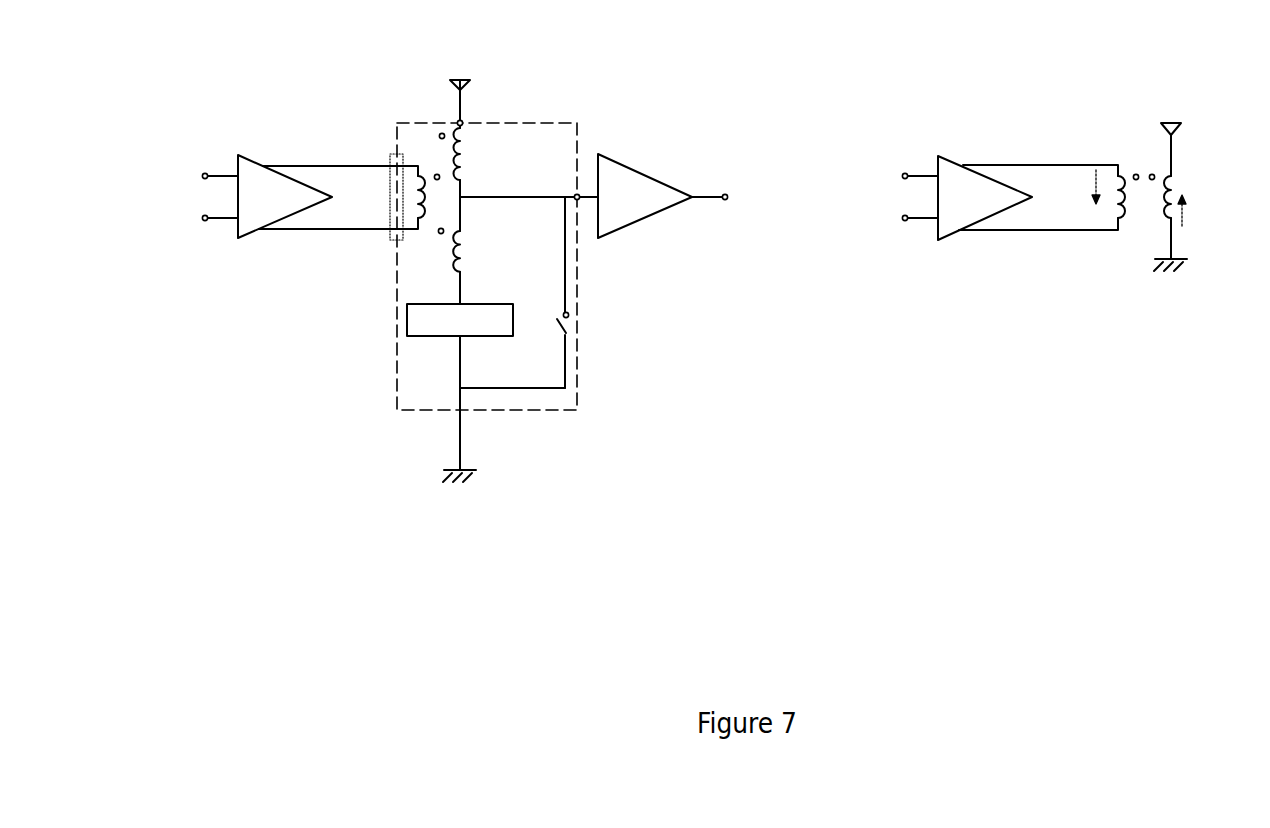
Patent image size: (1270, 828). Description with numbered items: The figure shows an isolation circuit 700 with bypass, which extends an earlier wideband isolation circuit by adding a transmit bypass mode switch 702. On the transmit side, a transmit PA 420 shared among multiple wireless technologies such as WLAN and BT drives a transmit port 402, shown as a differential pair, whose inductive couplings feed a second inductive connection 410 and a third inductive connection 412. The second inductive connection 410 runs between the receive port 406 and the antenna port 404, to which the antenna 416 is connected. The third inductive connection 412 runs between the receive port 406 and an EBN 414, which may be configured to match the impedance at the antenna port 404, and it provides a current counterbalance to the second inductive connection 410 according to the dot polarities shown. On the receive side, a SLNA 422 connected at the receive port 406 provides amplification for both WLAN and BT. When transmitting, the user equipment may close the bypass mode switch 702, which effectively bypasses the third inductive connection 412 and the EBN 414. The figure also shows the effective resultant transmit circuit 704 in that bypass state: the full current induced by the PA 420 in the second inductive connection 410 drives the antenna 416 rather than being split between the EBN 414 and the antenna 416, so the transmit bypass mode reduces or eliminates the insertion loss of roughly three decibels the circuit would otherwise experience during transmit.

The antenna 416 is at (456, 80).
The antenna port 404 is at (457, 122).
The transmit port 402 is at (394, 152).
The transmit PA 420 is at (250, 233).
The third inductive connection 412 is at (462, 247).
The receive port 406 is at (575, 196).
The SLNA 422 is at (614, 228).
The EBN 414 is at (500, 330).
The transmit bypass mode switch 702 is at (559, 336).
The isolation circuit with bypass 700 is at (437, 404).
The effective resultant transmit circuit 704 is at (1014, 285).
The second inductive connection 410 is at (1172, 186).